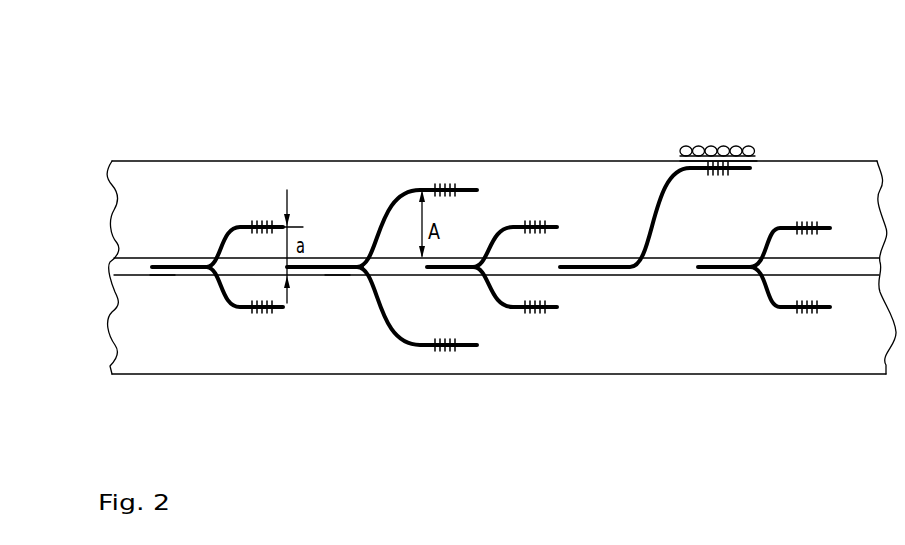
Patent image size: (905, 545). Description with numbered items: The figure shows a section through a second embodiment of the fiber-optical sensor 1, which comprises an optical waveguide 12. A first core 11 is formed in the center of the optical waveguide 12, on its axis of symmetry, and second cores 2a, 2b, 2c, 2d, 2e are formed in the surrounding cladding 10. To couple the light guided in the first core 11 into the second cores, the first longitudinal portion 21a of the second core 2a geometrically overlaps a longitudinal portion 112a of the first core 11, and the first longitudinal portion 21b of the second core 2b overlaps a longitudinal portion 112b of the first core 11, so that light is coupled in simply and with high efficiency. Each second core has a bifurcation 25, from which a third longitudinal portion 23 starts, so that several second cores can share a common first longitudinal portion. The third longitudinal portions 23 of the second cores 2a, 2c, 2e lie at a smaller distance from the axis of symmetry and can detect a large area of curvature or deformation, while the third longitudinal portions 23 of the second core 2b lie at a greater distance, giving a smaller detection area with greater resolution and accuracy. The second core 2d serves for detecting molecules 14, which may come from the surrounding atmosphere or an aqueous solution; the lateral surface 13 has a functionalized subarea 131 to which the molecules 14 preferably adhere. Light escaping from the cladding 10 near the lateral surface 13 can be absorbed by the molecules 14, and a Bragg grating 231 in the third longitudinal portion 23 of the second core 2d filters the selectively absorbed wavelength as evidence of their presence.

The fiber-optical sensor 1 is at (306, 93).
The cladding 10 is at (738, 360).
The first core 11 is at (859, 270).
The optical waveguide 12 is at (524, 388).
The lateral surface 13 is at (580, 160).
The subarea 131 is at (676, 158).
The molecules 14 is at (735, 132).
The second core 2a is at (201, 218).
The second core 2b is at (377, 199).
The second core 2c is at (518, 318).
The second core 2d is at (670, 222).
The second core 2e is at (758, 297).
The first longitudinal portion 21a is at (180, 272).
The first longitudinal portion 21b is at (312, 272).
The third longitudinal portion 23 is at (243, 310).
The Bragg grating 231 is at (264, 219).
The bifurcation 25 is at (360, 276).
The longitudinal portion 112a is at (161, 276).
The longitudinal portion 112b is at (338, 276).